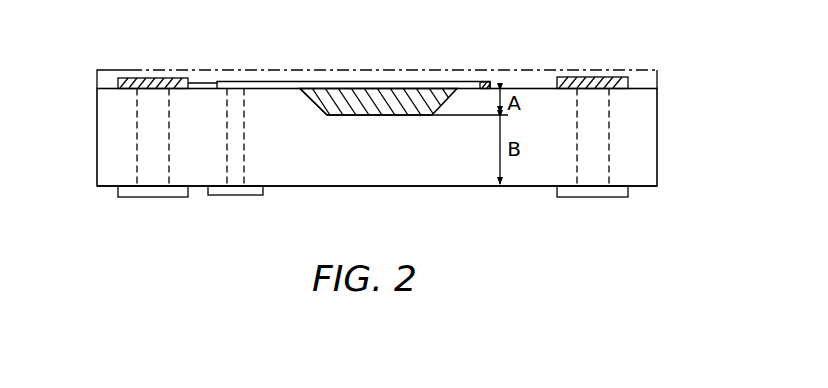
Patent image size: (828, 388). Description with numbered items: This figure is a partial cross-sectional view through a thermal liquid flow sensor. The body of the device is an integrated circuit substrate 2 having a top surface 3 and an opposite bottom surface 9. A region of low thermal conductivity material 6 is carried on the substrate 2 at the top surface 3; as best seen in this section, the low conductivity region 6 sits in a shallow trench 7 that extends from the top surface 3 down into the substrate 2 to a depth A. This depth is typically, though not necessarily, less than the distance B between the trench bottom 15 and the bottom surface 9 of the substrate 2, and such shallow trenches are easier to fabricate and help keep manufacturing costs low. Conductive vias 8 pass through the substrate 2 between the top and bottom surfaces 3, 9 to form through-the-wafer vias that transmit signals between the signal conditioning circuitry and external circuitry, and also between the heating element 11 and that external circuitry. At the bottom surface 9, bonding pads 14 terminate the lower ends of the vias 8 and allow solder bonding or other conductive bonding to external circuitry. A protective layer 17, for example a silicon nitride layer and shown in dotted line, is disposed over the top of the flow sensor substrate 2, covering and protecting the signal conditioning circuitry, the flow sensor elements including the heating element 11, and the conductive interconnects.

The integrated circuit substrate 2 is at (123, 137).
The top surface 3 is at (532, 87).
The region of low thermal conductivity material 6 is at (355, 102).
The shallow trench 7 is at (342, 122).
The conductive vias 8 is at (170, 133).
The bottom surface 9 is at (417, 187).
The heating element 11 is at (397, 82).
The bonding pads 14 is at (160, 198).
The trench bottom 15 is at (375, 117).
The protective layer 17 is at (657, 77).